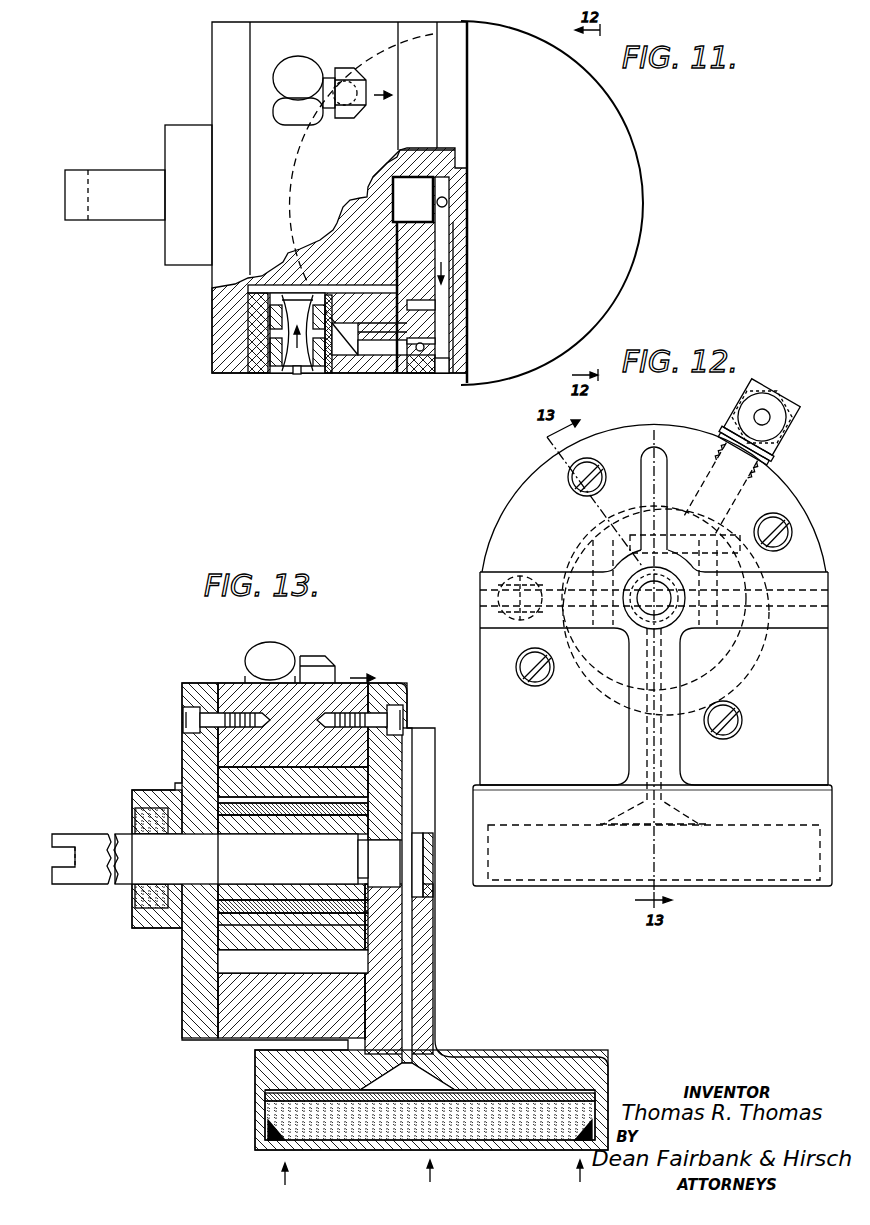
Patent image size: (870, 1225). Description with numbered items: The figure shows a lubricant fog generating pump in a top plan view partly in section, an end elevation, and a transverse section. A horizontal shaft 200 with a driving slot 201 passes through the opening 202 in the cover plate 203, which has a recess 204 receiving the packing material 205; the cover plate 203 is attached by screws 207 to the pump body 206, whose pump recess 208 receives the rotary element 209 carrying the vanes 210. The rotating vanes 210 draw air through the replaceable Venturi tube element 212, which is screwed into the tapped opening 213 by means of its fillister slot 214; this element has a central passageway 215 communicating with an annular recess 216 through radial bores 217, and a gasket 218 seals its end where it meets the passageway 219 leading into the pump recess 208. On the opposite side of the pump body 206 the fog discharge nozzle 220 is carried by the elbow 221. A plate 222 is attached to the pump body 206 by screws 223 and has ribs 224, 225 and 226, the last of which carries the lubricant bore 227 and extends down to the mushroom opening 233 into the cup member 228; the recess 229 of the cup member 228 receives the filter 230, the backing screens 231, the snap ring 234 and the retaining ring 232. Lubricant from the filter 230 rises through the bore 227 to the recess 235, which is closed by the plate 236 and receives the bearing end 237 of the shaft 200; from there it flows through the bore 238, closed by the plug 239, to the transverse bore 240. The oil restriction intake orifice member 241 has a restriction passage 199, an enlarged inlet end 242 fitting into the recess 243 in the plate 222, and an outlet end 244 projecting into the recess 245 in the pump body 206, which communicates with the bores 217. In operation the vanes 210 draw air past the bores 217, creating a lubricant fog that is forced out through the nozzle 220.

In FIG. 11, the restriction passage 199 is at (425, 351).
In FIG. 12, the restriction passage 199 is at (520, 624).
In FIG. 11, the horizontal shaft 200 is at (147, 216).
In FIG. 13, the horizontal shaft 200 is at (109, 834).
In FIG. 11, the driving slot 201 is at (94, 197).
In FIG. 13, the driving slot 201 is at (78, 884).
In FIG. 13, the opening 202 is at (183, 887).
In FIG. 11, the cover plate 203 is at (222, 376).
In FIG. 13, the cover plate 203 is at (189, 1038).
In FIG. 13, the recess 204 is at (143, 916).
In FIG. 13, the packing material 205 is at (177, 786).
In FIG. 11, the pump body 206 is at (250, 33).
In FIG. 13, the pump body 206 is at (230, 681).
In FIG. 13, the screws 207 is at (181, 708).
In FIG. 12, the pump recess 208 is at (762, 672).
In FIG. 13, the pump recess 208 is at (256, 986).
In FIG. 11, the rotary element 209 is at (337, 247).
In FIG. 12, the rotary element 209 is at (752, 650).
In FIG. 13, the rotary element 209 is at (345, 860).
In FIG. 12, the vanes 210 is at (745, 494).
In FIG. 13, the vanes 210 is at (355, 803).
In FIG. 11, the replaceable Venturi tube element 212 is at (316, 376).
In FIG. 11, the tapped opening 213 is at (258, 376).
In FIG. 11, the fillister slot 214 is at (295, 376).
In FIG. 11, the central passageway 215 is at (270, 341).
In FIG. 11, the annular recess 216 is at (264, 360).
In FIG. 11, the radial bores 217 is at (270, 352).
In FIG. 11, the gasket 218 is at (270, 310).
In FIG. 11, the passageway 219 is at (297, 298).
In FIG. 11, the fog discharge nozzle 220 is at (358, 110).
In FIG. 12, the fog discharge nozzle 220 is at (786, 425).
In FIG. 13, the fog discharge nozzle 220 is at (318, 656).
In FIG. 11, the elbow 221 is at (292, 118).
In FIG. 13, the elbow 221 is at (265, 650).
In FIG. 11, the plate 222 is at (452, 52).
In FIG. 12, the screws 223 is at (575, 490).
In FIG. 13, the screws 223 is at (410, 713).
In FIG. 12, the rib 224 is at (669, 462).
In FIG. 12, the rib 225 is at (492, 621).
In FIG. 12, the rib 226 is at (681, 765).
In FIG. 11, the lubricant bore 227 is at (448, 200).
In FIG. 12, the lubricant bore 227 is at (645, 748).
In FIG. 13, the lubricant bore 227 is at (412, 973).
In FIG. 12, the cup member 228 is at (753, 882).
In FIG. 13, the cup member 228 is at (431, 1100).
In FIG. 12, the recess 229 is at (566, 826).
In FIG. 13, the recess 229 is at (561, 1095).
In FIG. 13, the filter 230 is at (501, 1120).
In FIG. 13, the backing screens 231 is at (492, 1093).
In FIG. 13, the retaining ring 232 is at (280, 1130).
In FIG. 12, the mushroom opening 233 is at (688, 816).
In FIG. 13, the mushroom opening 233 is at (424, 1082).
In FIG. 13, the snap ring 234 is at (270, 1140).
In FIG. 11, the recess 235 is at (468, 160).
In FIG. 13, the recess 235 is at (434, 868).
In FIG. 11, the plate 236 is at (468, 202).
In FIG. 13, the plate 236 is at (418, 866).
In FIG. 11, the bearing end 237 is at (410, 187).
In FIG. 12, the bearing end 237 is at (756, 598).
In FIG. 13, the bearing end 237 is at (383, 853).
In FIG. 11, the bore 238 is at (455, 320).
In FIG. 12, the bore 238 is at (555, 586).
In FIG. 11, the plug 239 is at (450, 366).
In FIG. 12, the plug 239 is at (500, 598).
In FIG. 11, the transverse bore 240 is at (432, 340).
In FIG. 11, the oil restriction intake orifice member 241 is at (388, 376).
In FIG. 11, the enlarged inlet end 242 is at (426, 376).
In FIG. 12, the enlarged inlet end 242 is at (500, 578).
In FIG. 11, the recess 243 is at (407, 320).
In FIG. 11, the outlet end 244 is at (363, 318).
In FIG. 11, the recess 245 is at (348, 356).